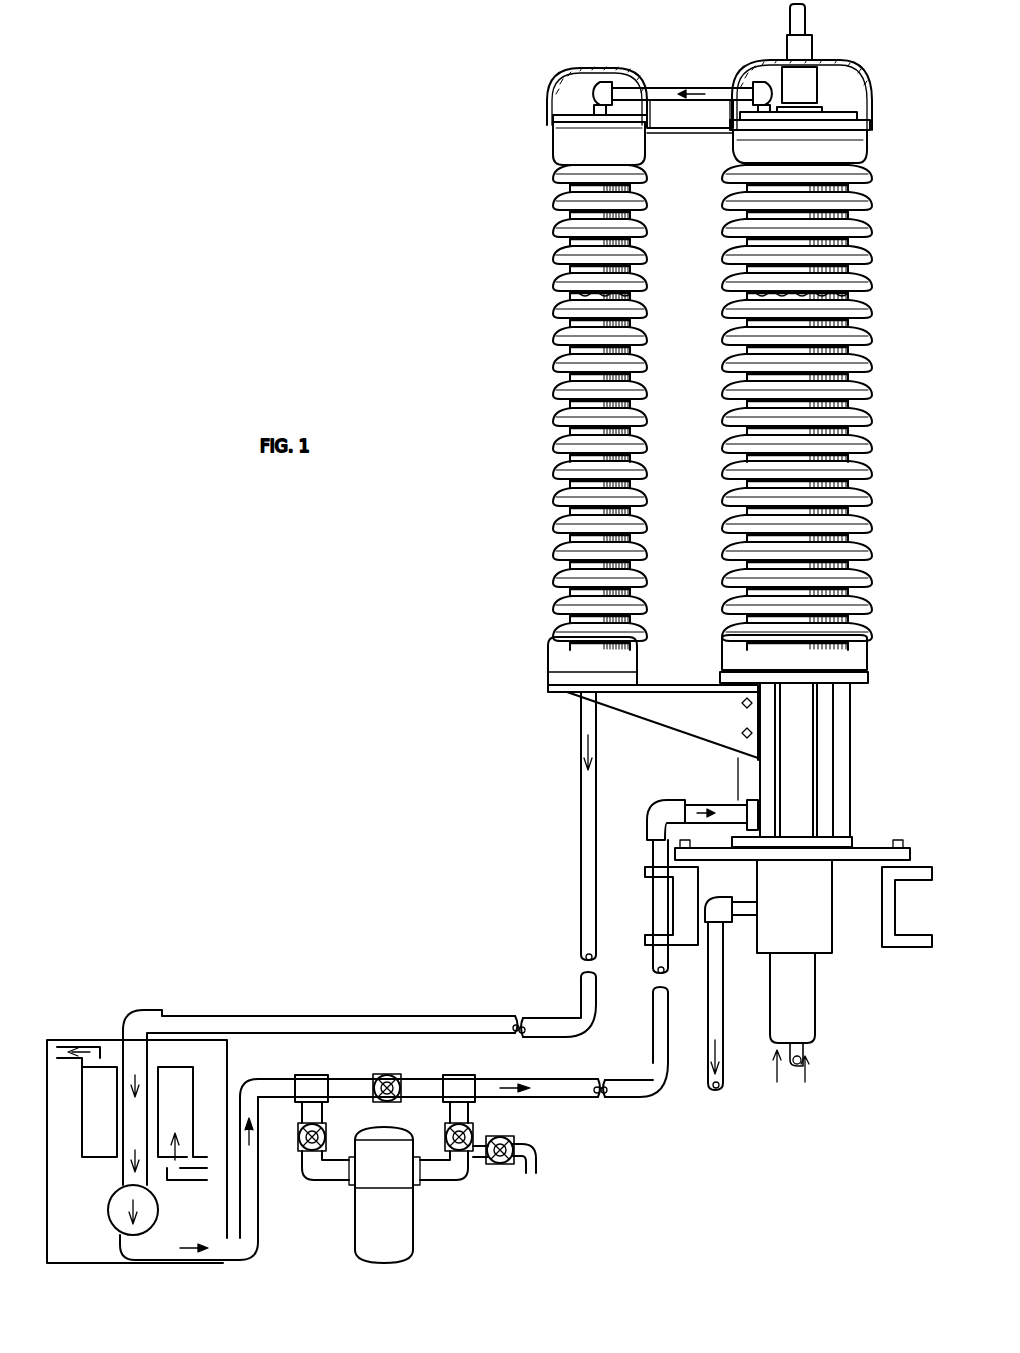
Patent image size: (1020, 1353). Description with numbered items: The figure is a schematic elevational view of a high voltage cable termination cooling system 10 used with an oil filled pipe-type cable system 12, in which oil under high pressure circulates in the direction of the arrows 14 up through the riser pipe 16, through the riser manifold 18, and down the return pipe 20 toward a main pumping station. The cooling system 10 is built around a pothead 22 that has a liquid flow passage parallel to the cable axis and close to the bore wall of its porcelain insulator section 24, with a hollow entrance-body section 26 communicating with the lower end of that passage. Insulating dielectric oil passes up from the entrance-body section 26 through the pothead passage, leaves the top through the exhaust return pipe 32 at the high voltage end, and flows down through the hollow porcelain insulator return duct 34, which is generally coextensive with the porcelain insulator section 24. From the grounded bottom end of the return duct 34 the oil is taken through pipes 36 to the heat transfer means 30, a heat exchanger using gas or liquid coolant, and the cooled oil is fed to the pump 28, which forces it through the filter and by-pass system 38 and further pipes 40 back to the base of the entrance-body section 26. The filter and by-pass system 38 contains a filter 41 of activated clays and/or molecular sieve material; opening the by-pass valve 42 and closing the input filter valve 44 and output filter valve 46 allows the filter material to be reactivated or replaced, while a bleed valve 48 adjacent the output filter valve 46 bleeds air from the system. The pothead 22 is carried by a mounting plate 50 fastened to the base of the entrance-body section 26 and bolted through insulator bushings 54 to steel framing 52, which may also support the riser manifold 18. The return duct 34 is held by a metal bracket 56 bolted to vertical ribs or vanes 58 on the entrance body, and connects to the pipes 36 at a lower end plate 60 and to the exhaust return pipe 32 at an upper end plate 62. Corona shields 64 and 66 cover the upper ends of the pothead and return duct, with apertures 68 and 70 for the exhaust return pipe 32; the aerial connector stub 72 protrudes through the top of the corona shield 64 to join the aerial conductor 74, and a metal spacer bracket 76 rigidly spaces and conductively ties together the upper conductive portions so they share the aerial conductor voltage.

The high voltage cable termination cooling system 10 is at (281, 825).
The oil filled pipe-type cable system 12 is at (822, 1021).
The arrows 14 is at (805, 1068).
The riser pipe 16 is at (805, 977).
The riser manifold 18 is at (832, 892).
The return pipe 20 is at (716, 1005).
The pothead 22 is at (877, 305).
The porcelain insulator section 24 is at (872, 472).
The entrance-body section 26 is at (833, 730).
The pump 28 is at (108, 1212).
The heat transfer means 30 is at (196, 1085).
The exhaust return pipe 32 is at (670, 86).
The insulator return duct 34 is at (552, 233).
The pipes 36 is at (395, 1015).
The filter and by-pass system 38 is at (420, 1149).
The pipes 40 is at (655, 1043).
The filter 41 is at (355, 1212).
The by-pass valve 42 is at (374, 1076).
The input filter valve 44 is at (326, 1138).
The output filter valve 46 is at (445, 1138).
The bleed valve 48 is at (512, 1136).
The mounting plate 50 is at (872, 848).
The steel framing 52 is at (897, 944).
The insulator bushings 54 is at (897, 848).
The metal bracket 56 is at (660, 730).
The vertical ribs or vanes 58 is at (738, 762).
The end plate 60 is at (548, 688).
The end plate 62 is at (558, 128).
The corona shield 64 is at (830, 62).
The corona shield 66 is at (583, 70).
The aperture 68 is at (735, 85).
The aperture 70 is at (652, 82).
The aerial connector stub 72 is at (787, 45).
The aerial conductor 74 is at (805, 8).
The metal spacer bracket 76 is at (688, 131).